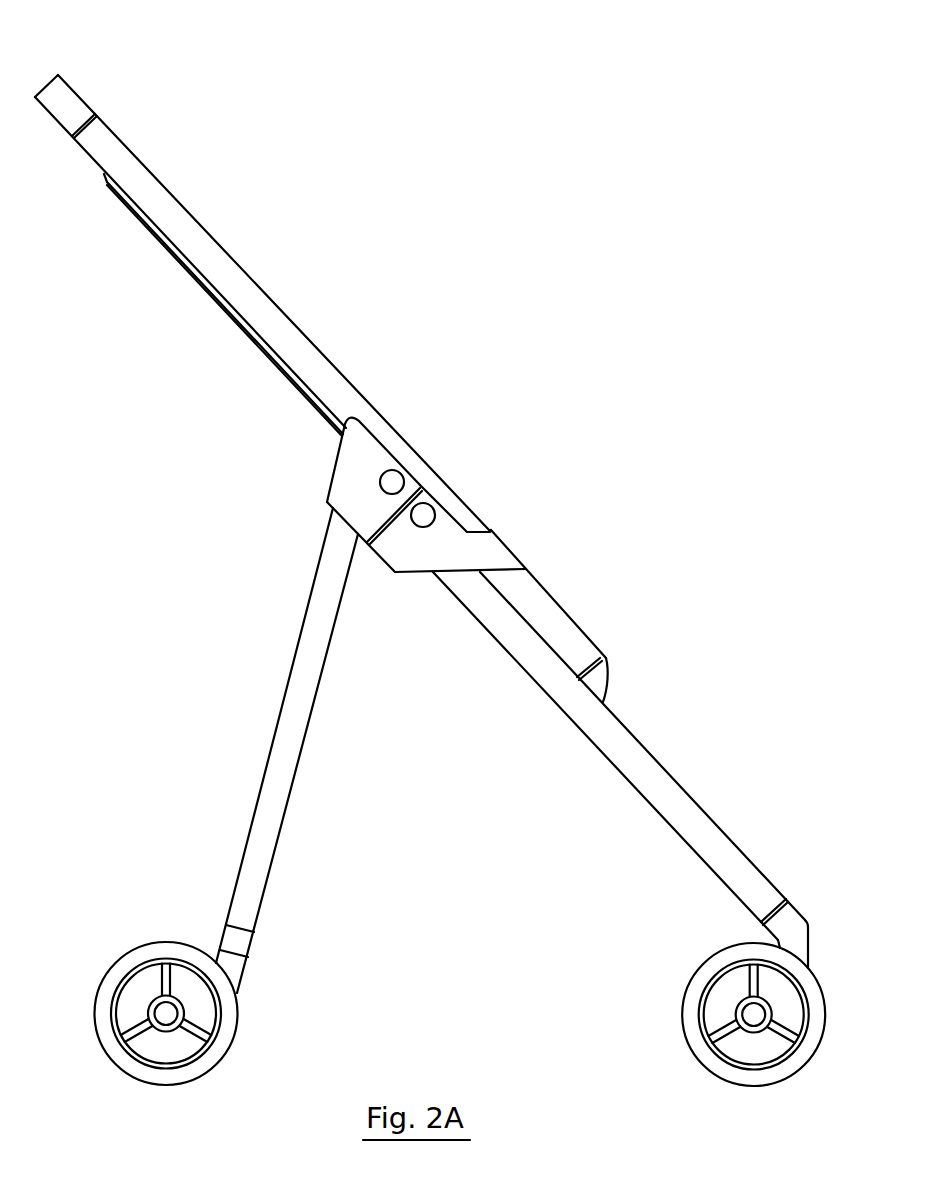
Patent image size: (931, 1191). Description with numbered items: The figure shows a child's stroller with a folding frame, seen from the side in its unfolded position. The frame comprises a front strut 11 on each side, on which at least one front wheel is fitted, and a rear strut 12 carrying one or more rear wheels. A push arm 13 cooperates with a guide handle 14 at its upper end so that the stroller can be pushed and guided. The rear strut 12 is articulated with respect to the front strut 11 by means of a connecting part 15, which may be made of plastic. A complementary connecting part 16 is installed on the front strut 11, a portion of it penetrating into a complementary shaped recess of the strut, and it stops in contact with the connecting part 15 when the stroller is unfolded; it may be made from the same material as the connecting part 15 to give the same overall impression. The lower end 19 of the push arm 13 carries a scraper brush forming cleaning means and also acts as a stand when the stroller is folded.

The front strut 11 is at (687, 820).
The rear strut 12 is at (268, 835).
The push arm 13 is at (267, 317).
The guide handle 14 is at (72, 103).
The connecting part 15 is at (353, 466).
The complementary connecting part 16 is at (408, 562).
The lower end 19 is at (597, 677).